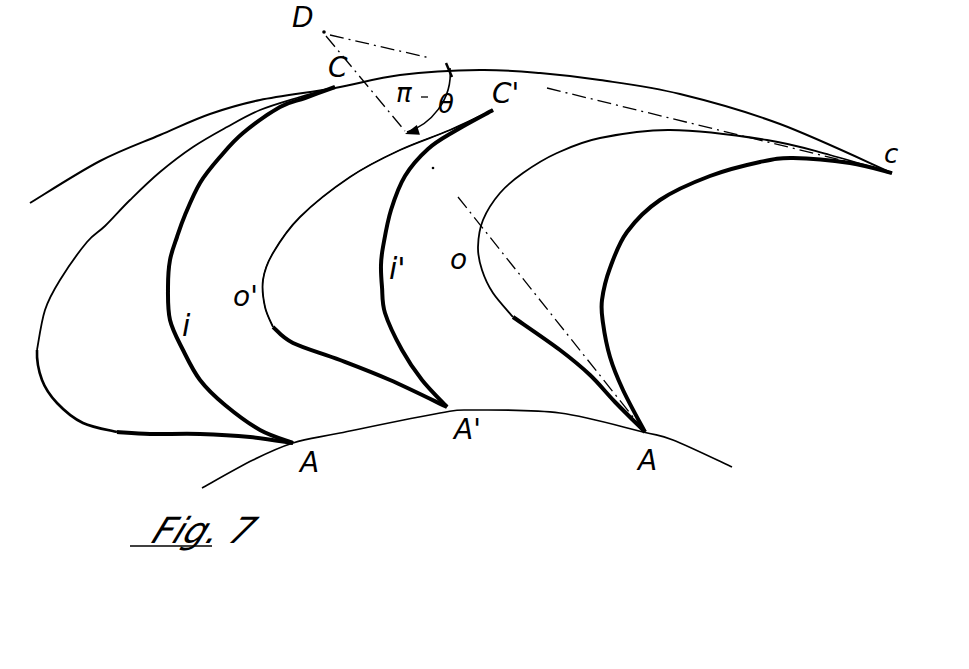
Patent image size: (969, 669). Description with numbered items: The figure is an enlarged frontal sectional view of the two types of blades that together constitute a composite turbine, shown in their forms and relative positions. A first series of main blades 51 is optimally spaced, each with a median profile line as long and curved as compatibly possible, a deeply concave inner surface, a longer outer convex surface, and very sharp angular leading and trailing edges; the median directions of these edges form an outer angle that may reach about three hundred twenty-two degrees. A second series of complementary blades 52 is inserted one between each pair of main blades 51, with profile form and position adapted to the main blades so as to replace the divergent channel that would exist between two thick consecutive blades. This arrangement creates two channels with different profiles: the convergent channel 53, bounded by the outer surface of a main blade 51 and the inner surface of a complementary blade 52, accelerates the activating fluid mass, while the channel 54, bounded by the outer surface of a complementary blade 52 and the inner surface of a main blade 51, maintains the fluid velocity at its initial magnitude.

The main blade 51 is at (464, 265).
The complementary blade 52 is at (378, 258).
The convergent channel 53 is at (476, 190).
The channel 54 is at (270, 204).